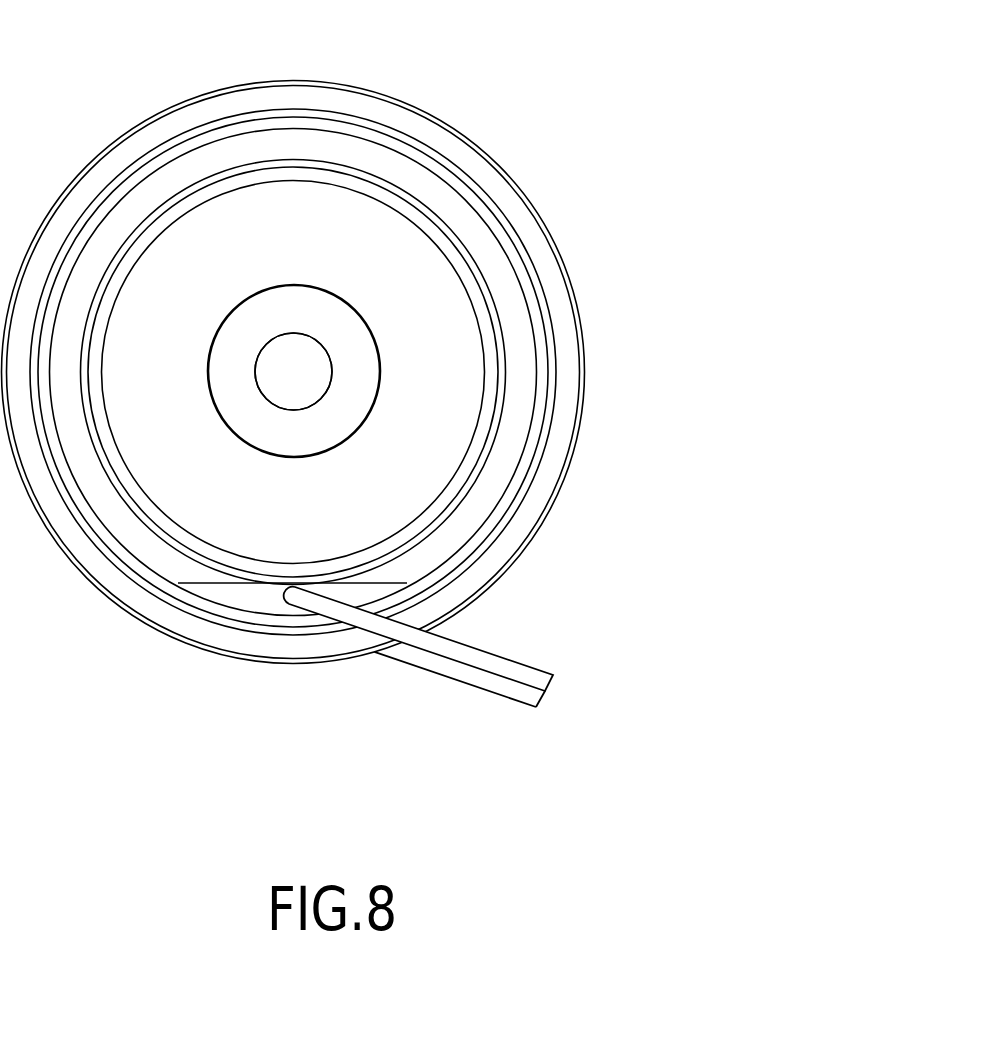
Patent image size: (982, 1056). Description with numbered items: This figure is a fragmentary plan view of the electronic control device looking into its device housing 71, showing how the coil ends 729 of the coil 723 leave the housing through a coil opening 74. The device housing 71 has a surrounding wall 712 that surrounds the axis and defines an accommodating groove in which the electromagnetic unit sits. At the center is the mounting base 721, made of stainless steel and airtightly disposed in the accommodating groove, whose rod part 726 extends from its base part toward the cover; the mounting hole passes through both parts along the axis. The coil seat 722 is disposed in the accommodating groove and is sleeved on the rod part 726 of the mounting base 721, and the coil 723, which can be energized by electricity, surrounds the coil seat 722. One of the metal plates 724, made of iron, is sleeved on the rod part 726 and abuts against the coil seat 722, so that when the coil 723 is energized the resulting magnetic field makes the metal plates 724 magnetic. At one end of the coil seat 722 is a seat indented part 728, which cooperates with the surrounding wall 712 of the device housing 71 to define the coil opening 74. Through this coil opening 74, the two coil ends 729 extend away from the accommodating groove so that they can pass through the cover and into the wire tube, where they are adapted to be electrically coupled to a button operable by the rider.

The device housing 71 is at (388, 100).
The surrounding wall 712 is at (568, 382).
The mounting base 721 is at (345, 342).
The rod part 726 is at (293, 371).
The coil seat 722 is at (488, 342).
The coil 723 is at (248, 592).
The metal plates 724 is at (270, 212).
The seat indented part 728 is at (225, 585).
The coil ends 729 is at (475, 650).
The coil opening 74 is at (267, 610).